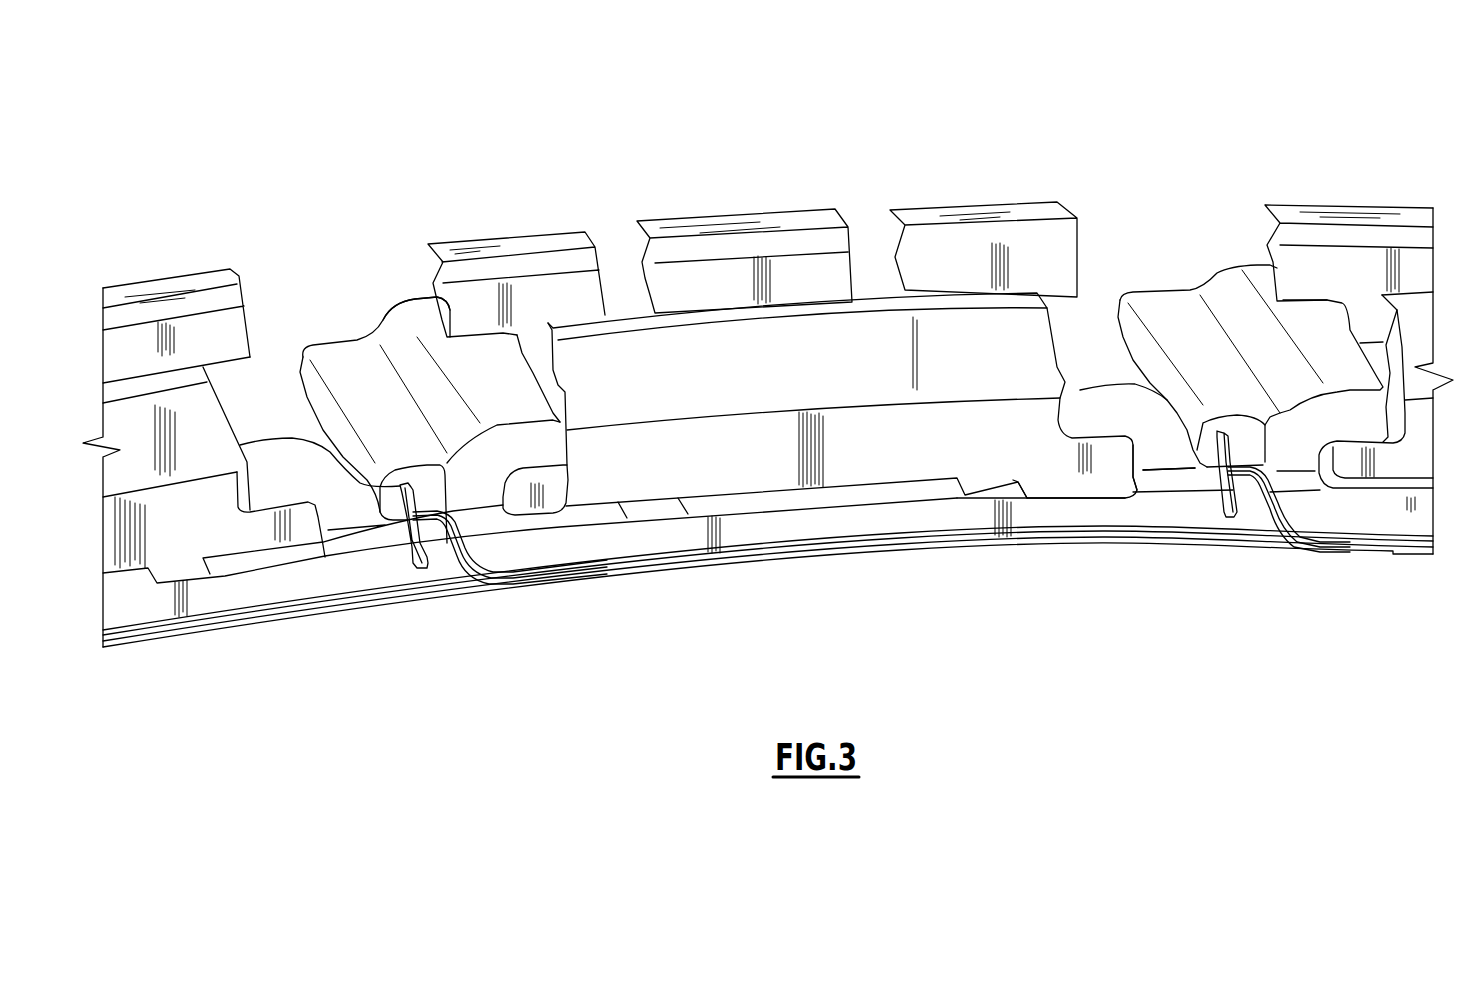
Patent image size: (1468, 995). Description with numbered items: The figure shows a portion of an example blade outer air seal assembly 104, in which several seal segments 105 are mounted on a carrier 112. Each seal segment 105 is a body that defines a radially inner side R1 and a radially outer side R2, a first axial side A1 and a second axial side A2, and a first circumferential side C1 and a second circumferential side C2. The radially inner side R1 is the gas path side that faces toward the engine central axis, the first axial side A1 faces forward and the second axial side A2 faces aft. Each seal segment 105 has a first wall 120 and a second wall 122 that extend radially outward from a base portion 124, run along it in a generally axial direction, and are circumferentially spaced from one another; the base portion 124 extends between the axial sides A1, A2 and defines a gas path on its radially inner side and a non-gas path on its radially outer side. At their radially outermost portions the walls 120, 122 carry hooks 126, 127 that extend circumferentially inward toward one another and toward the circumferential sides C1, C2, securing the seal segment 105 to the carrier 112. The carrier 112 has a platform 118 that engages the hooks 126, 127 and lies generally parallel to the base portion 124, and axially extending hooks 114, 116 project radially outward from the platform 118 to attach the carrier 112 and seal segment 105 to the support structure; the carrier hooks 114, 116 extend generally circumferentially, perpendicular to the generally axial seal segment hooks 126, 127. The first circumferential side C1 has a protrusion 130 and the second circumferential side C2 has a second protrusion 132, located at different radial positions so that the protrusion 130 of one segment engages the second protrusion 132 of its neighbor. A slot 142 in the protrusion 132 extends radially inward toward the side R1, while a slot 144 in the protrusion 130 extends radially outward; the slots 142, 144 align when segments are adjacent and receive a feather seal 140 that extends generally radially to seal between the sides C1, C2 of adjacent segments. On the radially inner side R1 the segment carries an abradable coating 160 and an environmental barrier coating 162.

The BOAS assembly 104 is at (1113, 112).
The seal segment 105 is at (1125, 520).
The carrier 112 is at (525, 295).
The hook 114 is at (724, 222).
The hook 116 is at (820, 391).
The platform 118 is at (557, 516).
The first wall 120 is at (483, 497).
The second wall 122 is at (1153, 452).
The base portion 124 is at (968, 527).
The hook 126 is at (459, 390).
The hook 127 is at (1096, 413).
The protrusion 130 is at (423, 480).
The second protrusion 132 is at (1253, 517).
The feather seal 140 is at (375, 338).
The slot 142 is at (423, 568).
The slot 144 is at (390, 510).
The abradable coating 160 is at (683, 572).
The environmental barrier coating 162 is at (738, 557).
The first axial side A1 is at (642, 540).
The second axial side A2 is at (413, 300).
The radially inner side R1 is at (777, 563).
The radially outer side R2 is at (872, 507).
The first circumferential side C1 is at (390, 512).
The second circumferential side C2 is at (1290, 510).